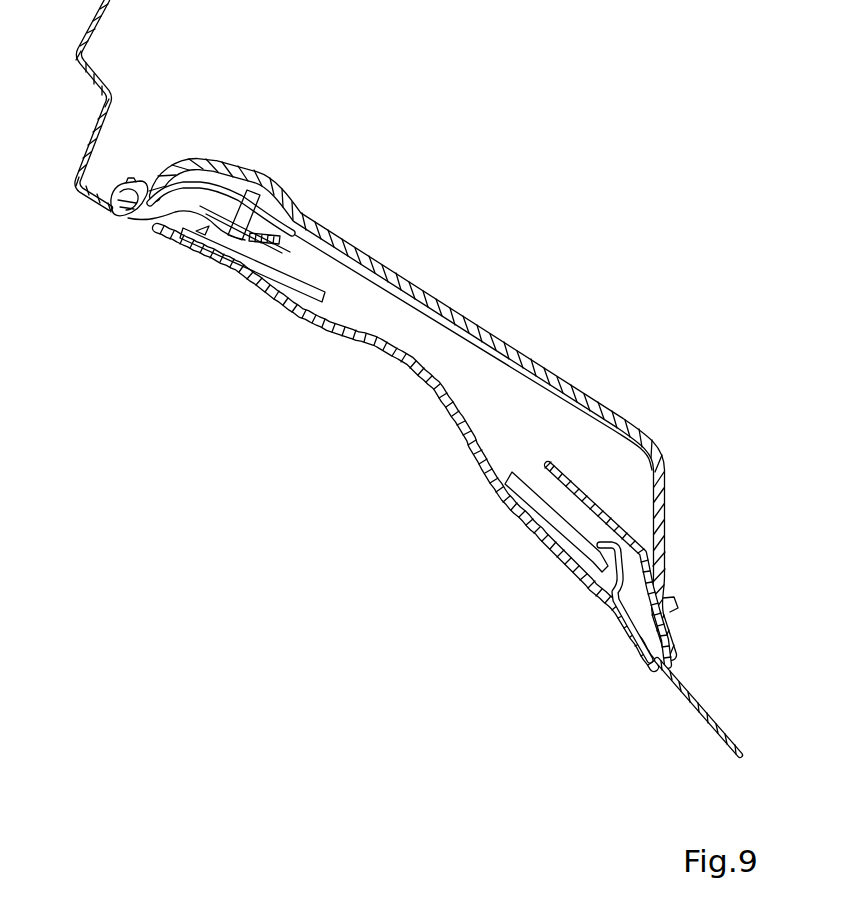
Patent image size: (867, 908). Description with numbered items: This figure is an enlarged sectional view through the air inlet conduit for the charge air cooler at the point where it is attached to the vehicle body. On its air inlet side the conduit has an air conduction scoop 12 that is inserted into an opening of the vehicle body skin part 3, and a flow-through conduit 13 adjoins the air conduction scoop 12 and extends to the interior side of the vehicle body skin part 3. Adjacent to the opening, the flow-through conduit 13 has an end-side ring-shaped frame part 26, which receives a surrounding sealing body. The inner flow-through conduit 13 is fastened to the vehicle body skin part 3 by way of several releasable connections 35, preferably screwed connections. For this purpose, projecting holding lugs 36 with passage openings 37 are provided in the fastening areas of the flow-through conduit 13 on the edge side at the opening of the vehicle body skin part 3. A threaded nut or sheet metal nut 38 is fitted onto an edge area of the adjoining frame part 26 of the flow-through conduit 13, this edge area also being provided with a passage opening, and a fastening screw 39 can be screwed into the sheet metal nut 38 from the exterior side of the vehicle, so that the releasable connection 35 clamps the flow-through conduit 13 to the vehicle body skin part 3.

The vehicle body skin part 3 is at (90, 148).
The air conduction scoop 12 is at (507, 492).
The flow-through conduit 13 is at (443, 302).
The frame part 26 is at (198, 188).
The releasable connection 35 is at (190, 235).
The holding lug 36 is at (260, 245).
The passage opening 37 is at (235, 243).
The sheet metal nut 38 is at (273, 242).
The fastening screw 39 is at (247, 247).